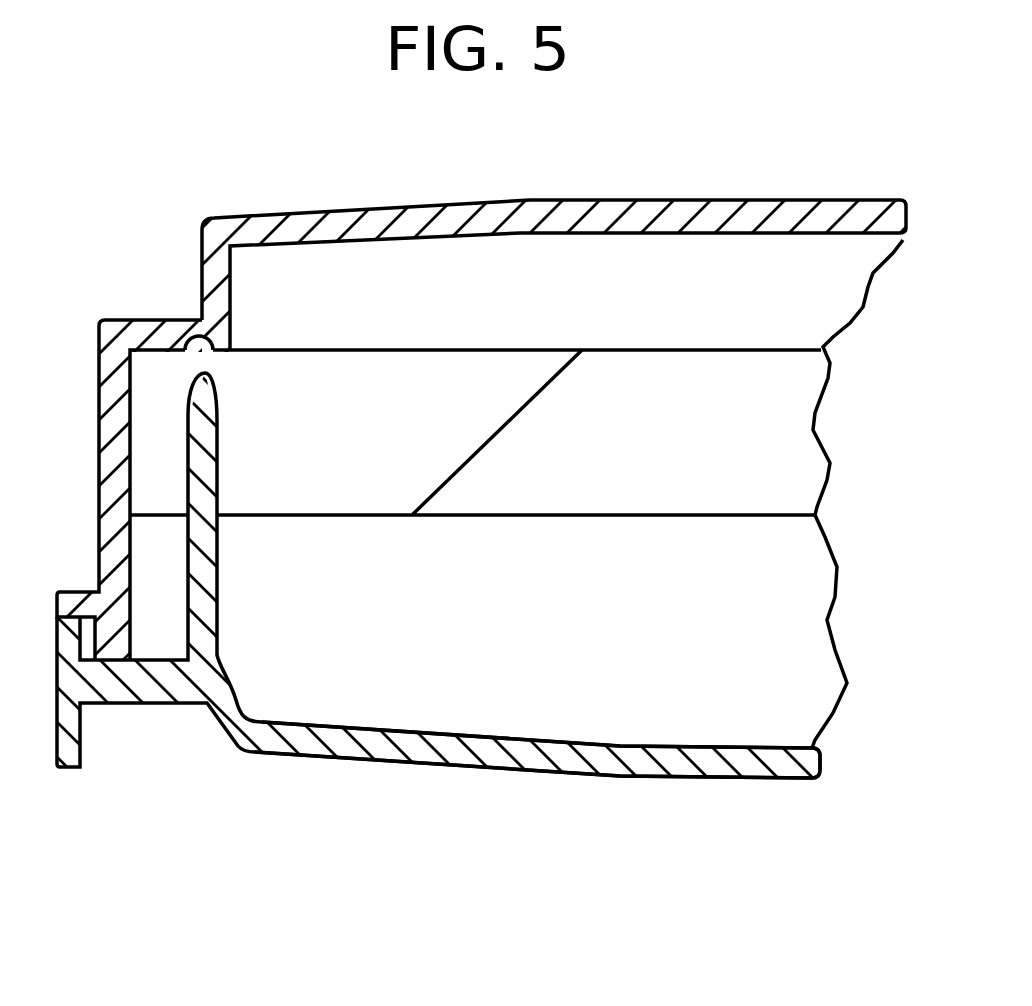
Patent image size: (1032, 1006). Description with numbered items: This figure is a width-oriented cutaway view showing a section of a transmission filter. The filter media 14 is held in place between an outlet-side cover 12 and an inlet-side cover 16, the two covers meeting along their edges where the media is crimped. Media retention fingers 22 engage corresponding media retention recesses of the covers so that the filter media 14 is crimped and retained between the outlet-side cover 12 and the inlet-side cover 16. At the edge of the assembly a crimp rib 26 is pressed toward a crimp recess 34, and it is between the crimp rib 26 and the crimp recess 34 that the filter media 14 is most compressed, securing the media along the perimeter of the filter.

The outlet-side cover 12 is at (742, 198).
The filter media 14 is at (765, 516).
The inlet-side cover 16 is at (727, 778).
The media retention fingers 22 is at (225, 558).
The crimp rib 26 is at (187, 388).
The crimp recess 34 is at (195, 328).